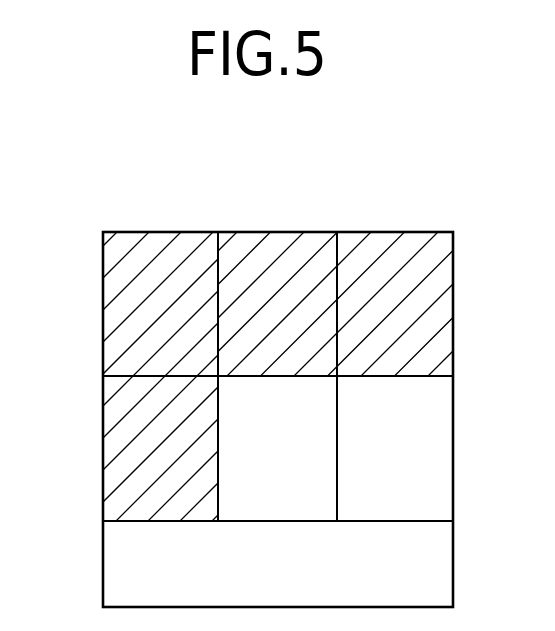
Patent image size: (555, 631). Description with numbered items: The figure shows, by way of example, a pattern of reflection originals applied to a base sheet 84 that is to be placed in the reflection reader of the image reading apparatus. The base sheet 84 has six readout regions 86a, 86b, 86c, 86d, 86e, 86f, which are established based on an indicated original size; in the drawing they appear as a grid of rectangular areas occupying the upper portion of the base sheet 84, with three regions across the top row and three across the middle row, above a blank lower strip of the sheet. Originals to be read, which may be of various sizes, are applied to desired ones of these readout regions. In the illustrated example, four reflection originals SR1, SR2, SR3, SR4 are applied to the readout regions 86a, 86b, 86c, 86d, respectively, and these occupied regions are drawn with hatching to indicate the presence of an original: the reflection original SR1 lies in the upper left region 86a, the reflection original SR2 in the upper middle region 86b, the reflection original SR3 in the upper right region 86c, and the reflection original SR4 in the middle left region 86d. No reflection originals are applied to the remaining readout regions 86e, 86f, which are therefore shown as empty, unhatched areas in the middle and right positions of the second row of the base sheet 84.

The base sheet 84 is at (417, 552).
The readout region 86a is at (165, 232).
The readout region 86b is at (293, 232).
The readout region 86c is at (393, 232).
The readout region 86d is at (103, 484).
The readout region 86e is at (290, 495).
The readout region 86f is at (438, 432).
The reflection original SR1 is at (130, 298).
The reflection original SR2 is at (255, 232).
The reflection original SR3 is at (400, 289).
The reflection original SR4 is at (130, 428).